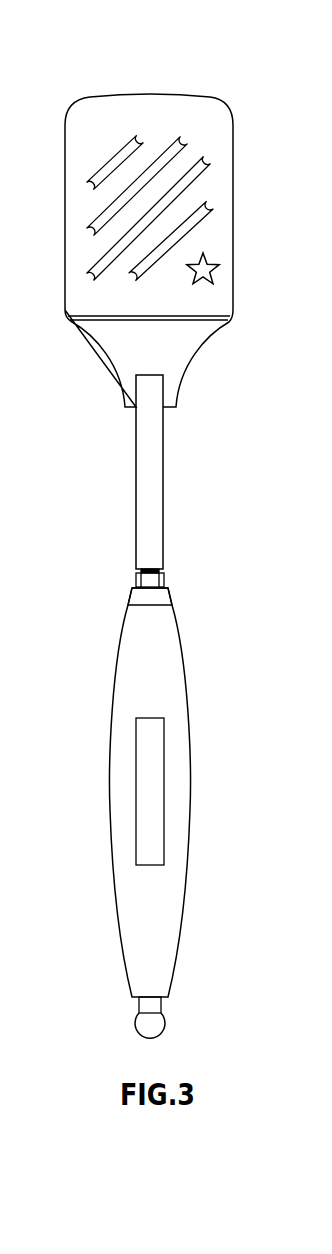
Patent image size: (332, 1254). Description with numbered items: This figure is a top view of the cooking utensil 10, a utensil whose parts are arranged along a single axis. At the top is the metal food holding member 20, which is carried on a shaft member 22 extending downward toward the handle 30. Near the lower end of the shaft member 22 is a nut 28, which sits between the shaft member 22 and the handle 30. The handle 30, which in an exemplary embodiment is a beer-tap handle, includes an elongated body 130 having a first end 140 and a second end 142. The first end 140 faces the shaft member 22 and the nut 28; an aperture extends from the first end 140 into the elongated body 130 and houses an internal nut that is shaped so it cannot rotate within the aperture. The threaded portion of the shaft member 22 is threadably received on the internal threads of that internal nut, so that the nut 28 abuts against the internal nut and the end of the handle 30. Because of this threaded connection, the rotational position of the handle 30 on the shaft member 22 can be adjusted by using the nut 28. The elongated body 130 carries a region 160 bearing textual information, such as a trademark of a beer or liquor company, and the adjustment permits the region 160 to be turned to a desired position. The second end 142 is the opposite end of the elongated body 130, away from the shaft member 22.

The cooking utensil 10 is at (167, 541).
The metal food holding member 20 is at (218, 224).
The shaft member 22 is at (163, 482).
The nut 28 is at (165, 580).
The handle 30 is at (161, 833).
The elongated body 130 is at (191, 757).
The first end 140 is at (131, 588).
The second end 142 is at (148, 1038).
The region 160 is at (135, 795).